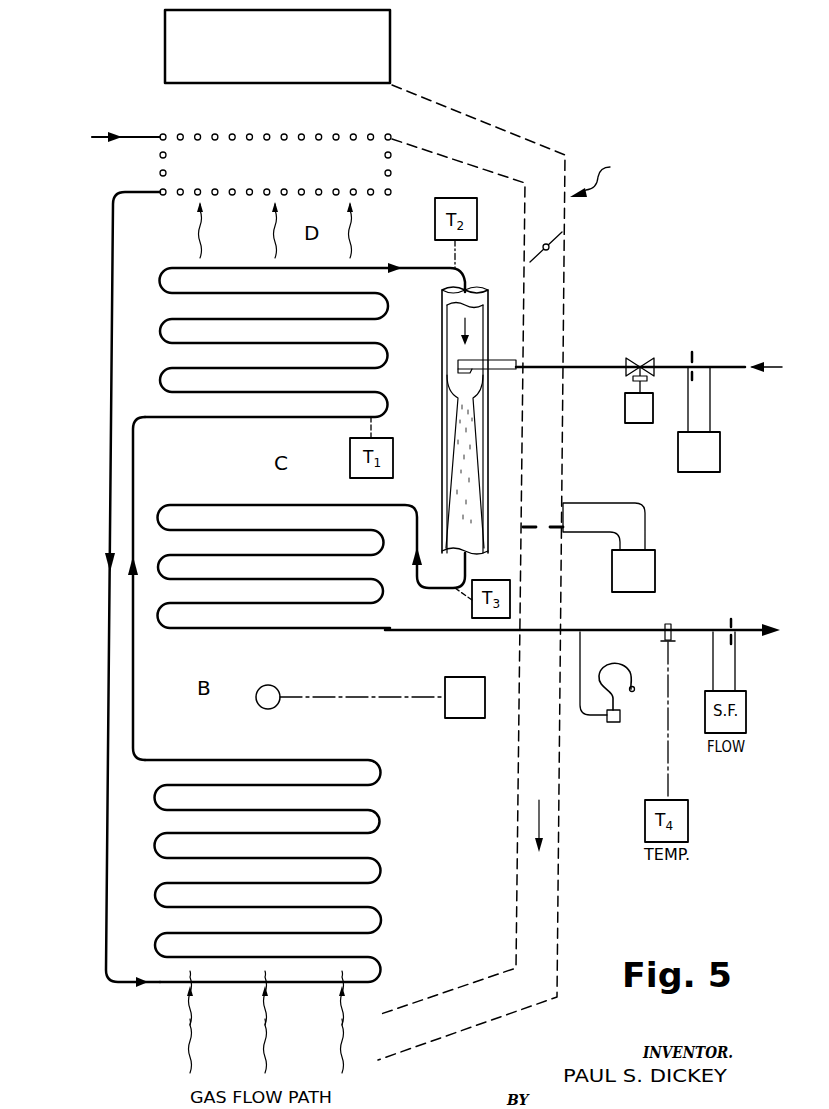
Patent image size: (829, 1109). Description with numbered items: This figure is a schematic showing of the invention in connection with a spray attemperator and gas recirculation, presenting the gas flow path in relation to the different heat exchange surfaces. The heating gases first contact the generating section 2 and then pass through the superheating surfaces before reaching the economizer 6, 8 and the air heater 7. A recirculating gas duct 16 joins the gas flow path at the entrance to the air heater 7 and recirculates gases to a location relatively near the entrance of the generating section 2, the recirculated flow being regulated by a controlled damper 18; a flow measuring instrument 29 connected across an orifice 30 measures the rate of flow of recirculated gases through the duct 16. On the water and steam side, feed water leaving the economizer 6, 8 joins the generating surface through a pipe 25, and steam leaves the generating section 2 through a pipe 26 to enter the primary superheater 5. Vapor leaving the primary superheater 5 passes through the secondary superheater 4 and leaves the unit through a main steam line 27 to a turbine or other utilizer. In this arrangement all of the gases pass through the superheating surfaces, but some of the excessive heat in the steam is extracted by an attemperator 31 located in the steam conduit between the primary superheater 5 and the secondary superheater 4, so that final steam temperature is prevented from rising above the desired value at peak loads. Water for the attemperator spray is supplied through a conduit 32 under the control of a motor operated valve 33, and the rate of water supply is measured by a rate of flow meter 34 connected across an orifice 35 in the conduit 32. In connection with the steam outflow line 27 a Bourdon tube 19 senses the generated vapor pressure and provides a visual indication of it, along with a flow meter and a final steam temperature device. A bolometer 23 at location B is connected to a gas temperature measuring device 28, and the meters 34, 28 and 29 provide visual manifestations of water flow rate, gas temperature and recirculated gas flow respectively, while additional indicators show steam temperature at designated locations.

The generating section 2 is at (263, 871).
The secondary superheater 4 is at (312, 566).
The primary superheater 5 is at (305, 340).
The economizer 6 is at (275, 164).
The air heater 7 is at (277, 46).
The economizer 8 is at (275, 164).
The recirculating gas duct 16 is at (550, 148).
The damper 18 is at (556, 232).
The Bourdon tube 19 is at (619, 668).
The bolometer 23 is at (278, 688).
The pipe 25 is at (105, 896).
The pipe 26 is at (135, 742).
The main steam line 27 is at (394, 633).
The gas temperature measuring device 28 is at (385, 718).
The flow measuring instrument 29 is at (609, 558).
The orifice 30 is at (530, 523).
The attemperator 31 is at (441, 338).
The conduit 32 is at (581, 364).
The valve 33 is at (641, 356).
The rate of flow meter 34 is at (699, 430).
The orifice 35 is at (694, 356).